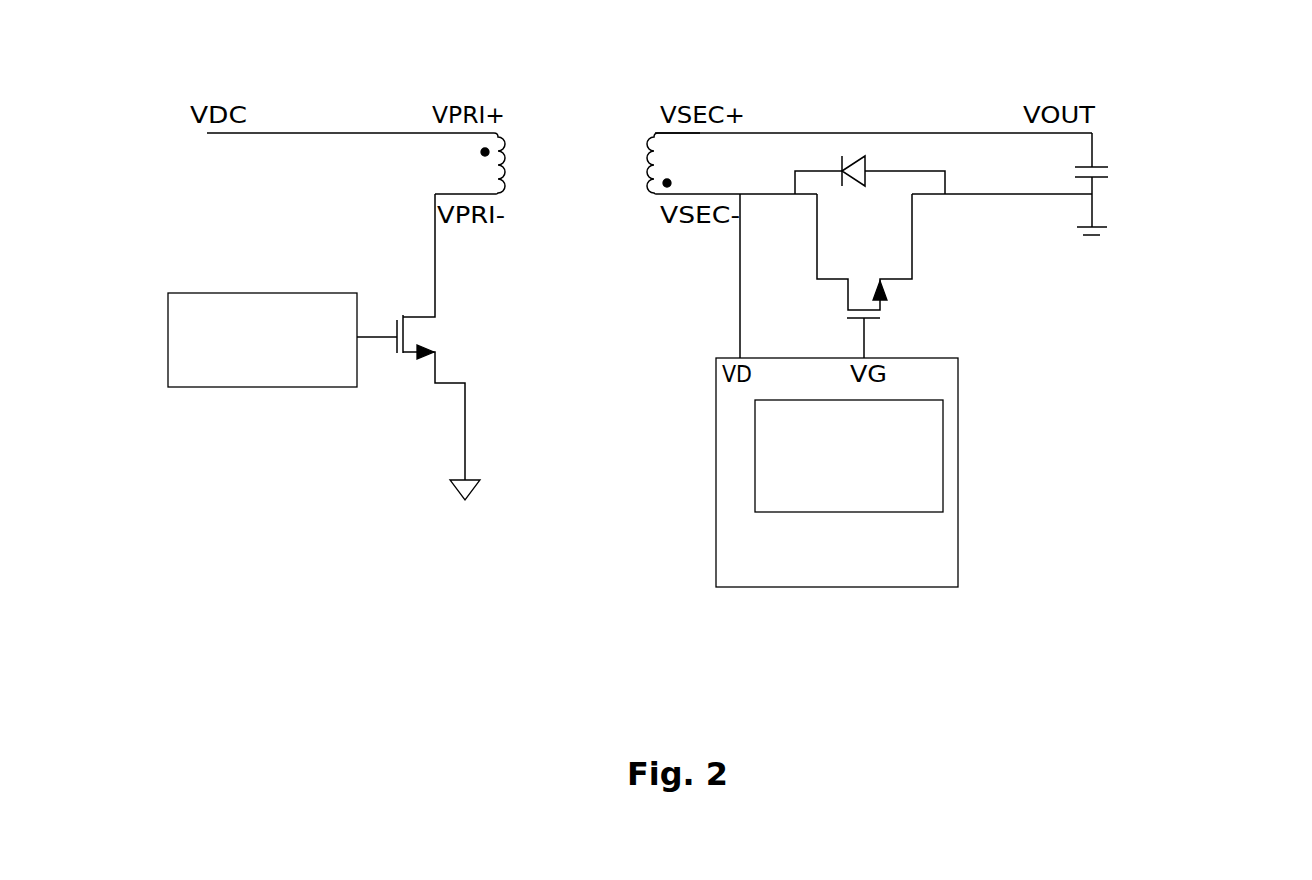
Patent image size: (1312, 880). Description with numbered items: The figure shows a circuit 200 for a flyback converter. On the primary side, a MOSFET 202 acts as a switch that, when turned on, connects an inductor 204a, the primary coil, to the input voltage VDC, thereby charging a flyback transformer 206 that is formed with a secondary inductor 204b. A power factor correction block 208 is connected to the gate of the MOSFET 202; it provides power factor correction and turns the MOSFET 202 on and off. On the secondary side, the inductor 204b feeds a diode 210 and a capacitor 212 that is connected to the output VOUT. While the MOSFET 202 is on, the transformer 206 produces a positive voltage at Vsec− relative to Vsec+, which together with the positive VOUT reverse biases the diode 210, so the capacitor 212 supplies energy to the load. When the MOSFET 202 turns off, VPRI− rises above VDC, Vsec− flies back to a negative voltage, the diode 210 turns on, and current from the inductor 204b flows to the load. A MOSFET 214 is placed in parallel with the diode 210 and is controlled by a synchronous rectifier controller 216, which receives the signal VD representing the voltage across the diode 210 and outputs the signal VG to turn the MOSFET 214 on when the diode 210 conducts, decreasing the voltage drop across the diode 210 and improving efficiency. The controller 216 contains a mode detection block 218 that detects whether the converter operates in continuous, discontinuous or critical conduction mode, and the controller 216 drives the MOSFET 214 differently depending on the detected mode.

The circuit 200 is at (1300, 60).
The metal oxide field effect transistor 202 is at (488, 349).
The inductor 204a is at (568, 176).
The inductor 204b is at (640, 176).
The flyback transformer 206 is at (652, 87).
The power factor correction block 208 is at (272, 388).
The diode 210 is at (857, 157).
The capacitor 212 is at (1068, 177).
The MOSFET 214 is at (878, 271).
The synchronous rectifier controller 216 is at (845, 587).
The mode detection block 218 is at (860, 512).